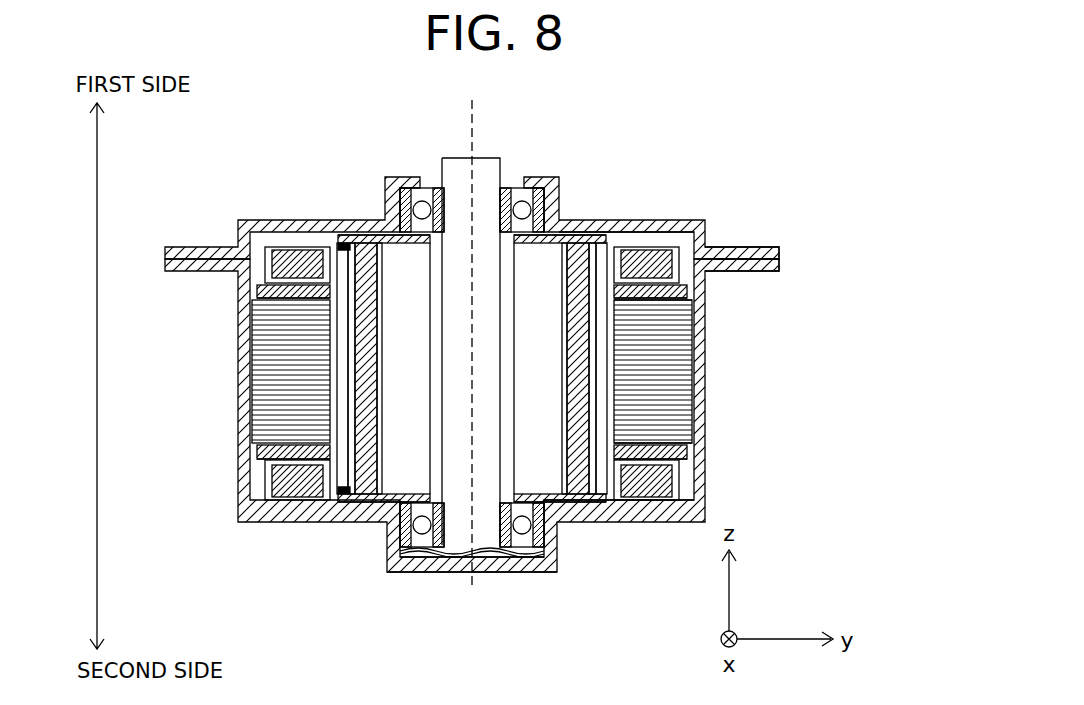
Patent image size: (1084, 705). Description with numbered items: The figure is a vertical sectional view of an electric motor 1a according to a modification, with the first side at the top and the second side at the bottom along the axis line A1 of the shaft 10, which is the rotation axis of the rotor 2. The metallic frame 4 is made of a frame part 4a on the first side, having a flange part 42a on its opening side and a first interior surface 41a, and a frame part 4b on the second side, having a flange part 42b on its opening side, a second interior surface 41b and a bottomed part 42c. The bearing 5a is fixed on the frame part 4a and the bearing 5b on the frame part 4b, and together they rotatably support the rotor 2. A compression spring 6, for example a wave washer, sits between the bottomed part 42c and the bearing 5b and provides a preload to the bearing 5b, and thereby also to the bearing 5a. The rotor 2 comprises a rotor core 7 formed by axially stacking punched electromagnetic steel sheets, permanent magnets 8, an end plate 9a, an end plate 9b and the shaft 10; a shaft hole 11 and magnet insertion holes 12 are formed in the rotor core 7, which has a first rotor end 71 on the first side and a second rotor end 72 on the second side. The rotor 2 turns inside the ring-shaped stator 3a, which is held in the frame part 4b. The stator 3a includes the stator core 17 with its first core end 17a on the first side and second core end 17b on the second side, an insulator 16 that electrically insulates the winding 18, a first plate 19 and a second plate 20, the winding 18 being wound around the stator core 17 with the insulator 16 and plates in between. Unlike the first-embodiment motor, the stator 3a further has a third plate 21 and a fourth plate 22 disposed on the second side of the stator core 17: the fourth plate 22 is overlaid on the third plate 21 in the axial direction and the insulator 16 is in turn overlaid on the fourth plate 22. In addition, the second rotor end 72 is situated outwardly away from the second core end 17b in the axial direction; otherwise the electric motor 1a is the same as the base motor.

The electric motor 1a is at (217, 180).
The rotor 2 is at (165, 277).
The stator 3a is at (807, 302).
The frame 4 is at (880, 200).
The frame part 4a is at (705, 222).
The frame part 4b is at (710, 280).
The flange part 42a is at (765, 251).
The flange part 42b is at (765, 263).
The bottomed part 42c is at (485, 566).
The bearing 5a is at (524, 205).
The bearing 5b is at (524, 527).
The compression spring 6 is at (432, 556).
The rotor core 7 is at (345, 390).
The permanent magnets 8 is at (372, 422).
The end plate 9a is at (325, 250).
The end plate 9b is at (340, 498).
The shaft 10 is at (445, 458).
The shaft hole 11 is at (444, 346).
The magnet insertion holes 12 is at (352, 318).
The insulator 16 is at (645, 285).
The stator core 17 is at (655, 382).
The first core end 17a is at (630, 297).
The second core end 17b is at (640, 447).
The winding 18 is at (665, 268).
The first plate 19 is at (678, 302).
The second plate 20 is at (670, 295).
The third plate 21 is at (665, 447).
The fourth plate 22 is at (680, 459).
The interior surface 41a is at (590, 237).
The interior surface 41b is at (590, 506).
The first rotor end 71 is at (346, 238).
The second rotor end 72 is at (345, 504).
The axis line A1 is at (472, 332).